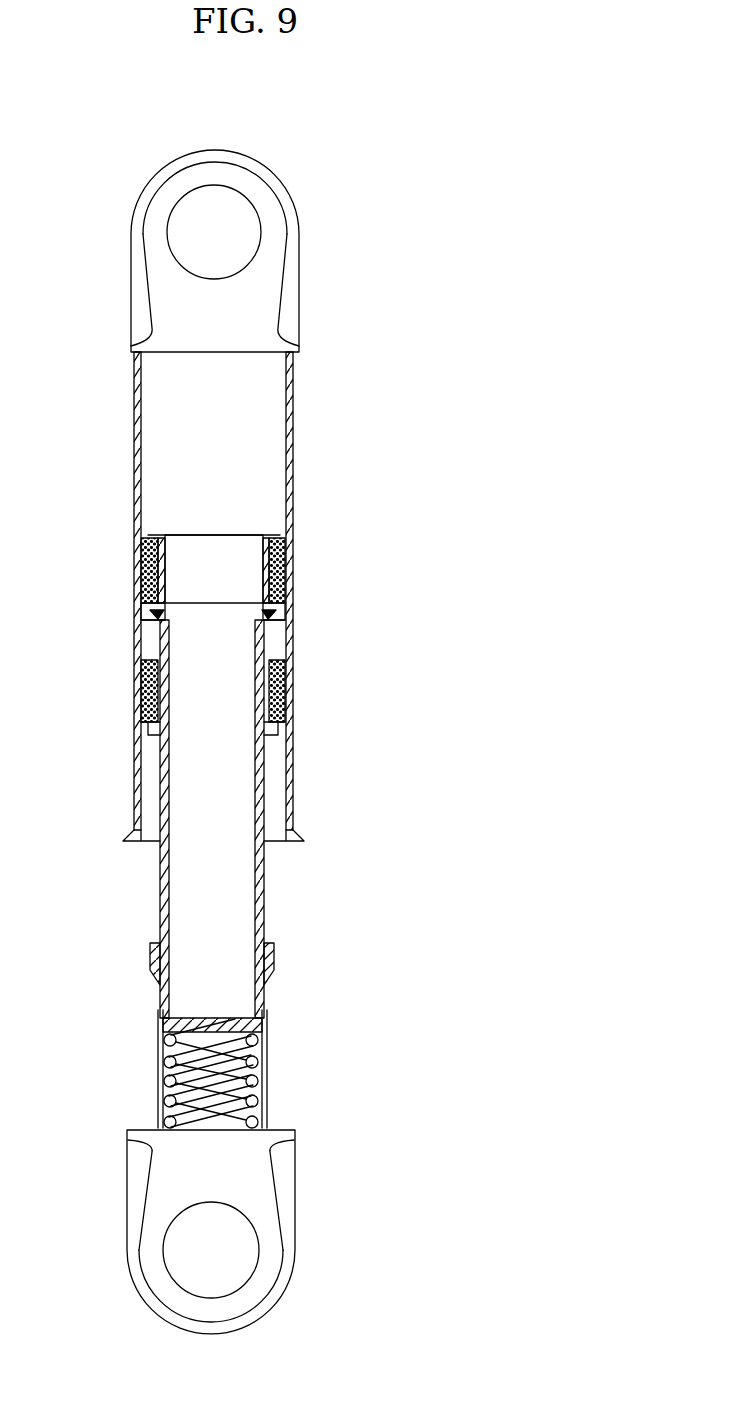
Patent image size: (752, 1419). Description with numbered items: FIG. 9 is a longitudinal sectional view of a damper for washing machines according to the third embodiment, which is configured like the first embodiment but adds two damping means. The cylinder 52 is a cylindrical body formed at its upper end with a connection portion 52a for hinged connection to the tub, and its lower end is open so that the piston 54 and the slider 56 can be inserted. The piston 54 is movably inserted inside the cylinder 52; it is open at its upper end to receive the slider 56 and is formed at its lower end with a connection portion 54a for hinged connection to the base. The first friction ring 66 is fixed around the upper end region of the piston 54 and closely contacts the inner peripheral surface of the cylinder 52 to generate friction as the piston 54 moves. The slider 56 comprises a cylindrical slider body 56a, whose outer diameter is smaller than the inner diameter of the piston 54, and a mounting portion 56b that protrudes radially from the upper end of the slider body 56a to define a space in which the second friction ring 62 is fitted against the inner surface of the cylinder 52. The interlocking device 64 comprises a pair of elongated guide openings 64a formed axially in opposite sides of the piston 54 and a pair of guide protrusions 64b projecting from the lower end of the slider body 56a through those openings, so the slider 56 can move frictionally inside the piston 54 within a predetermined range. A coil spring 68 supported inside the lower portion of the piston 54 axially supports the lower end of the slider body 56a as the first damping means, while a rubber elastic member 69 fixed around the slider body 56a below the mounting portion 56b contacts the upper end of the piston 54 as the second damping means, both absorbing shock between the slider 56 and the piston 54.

The cylinder 52 is at (118, 440).
The connection portion 52a is at (265, 300).
The piston 54 is at (136, 1104).
The connection portion 54a is at (263, 1182).
The slider 56 is at (148, 646).
The slider body 56a is at (263, 635).
The mounting portion 56b is at (282, 570).
The second friction ring 62 is at (141, 563).
The interlocking device 64 is at (134, 977).
The guide openings 64a is at (262, 1024).
The guide protrusions 64b is at (265, 962).
The first friction ring 66 is at (143, 693).
The coil spring 68 is at (165, 1060).
The elastic member 69 is at (157, 616).